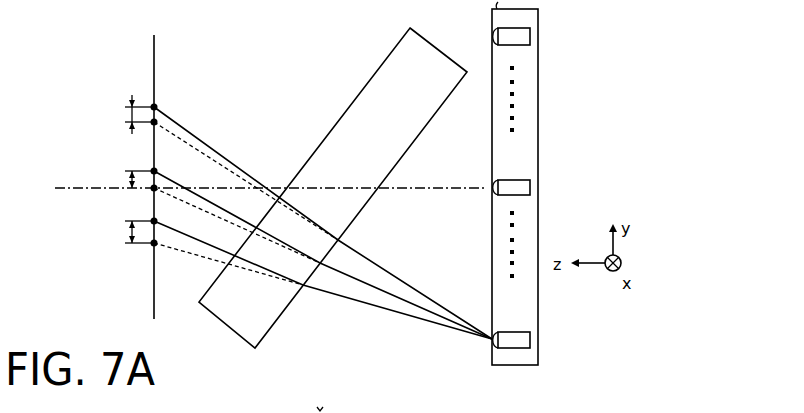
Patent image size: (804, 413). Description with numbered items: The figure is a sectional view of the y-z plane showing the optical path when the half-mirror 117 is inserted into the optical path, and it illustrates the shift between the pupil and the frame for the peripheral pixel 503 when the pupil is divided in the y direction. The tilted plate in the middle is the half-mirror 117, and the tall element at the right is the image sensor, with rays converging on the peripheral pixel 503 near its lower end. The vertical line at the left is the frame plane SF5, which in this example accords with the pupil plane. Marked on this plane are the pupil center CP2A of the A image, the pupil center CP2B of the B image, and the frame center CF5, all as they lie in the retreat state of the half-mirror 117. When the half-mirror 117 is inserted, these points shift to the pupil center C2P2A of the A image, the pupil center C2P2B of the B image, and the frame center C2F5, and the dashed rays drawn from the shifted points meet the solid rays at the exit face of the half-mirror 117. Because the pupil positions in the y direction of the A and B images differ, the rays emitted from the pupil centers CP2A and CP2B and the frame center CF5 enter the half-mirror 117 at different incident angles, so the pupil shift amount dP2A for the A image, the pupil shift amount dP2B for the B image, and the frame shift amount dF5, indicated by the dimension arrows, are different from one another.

The half-mirror 117 is at (388, 58).
The peripheral pixel 503 is at (531, 340).
The frame plane SF5 is at (154, 58).
The pupil center of the A image CP2A is at (152, 106).
The shifted pupil center of the A image C2P2A is at (154, 122).
The shifted frame center C2F5 is at (154, 171).
The frame center CF5 is at (154, 188).
The pupil center of the B image CP2B is at (154, 221).
The shifted pupil center of the B image C2P2B is at (154, 243).
The pupil shift amount for the A image dP2A is at (121, 114).
The frame shift amount dF5 is at (124, 176).
The pupil shift amount for the B image dP2B is at (122, 229).